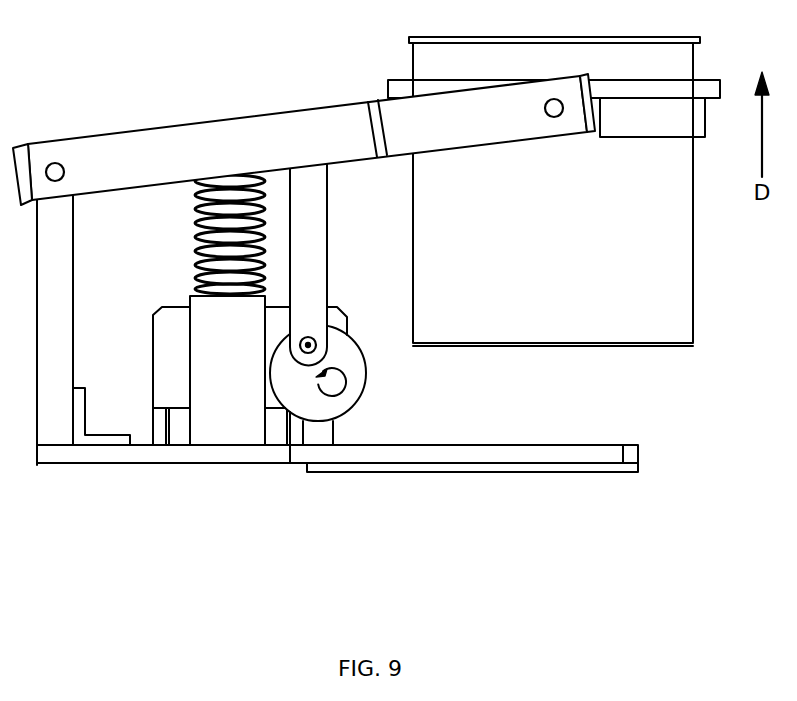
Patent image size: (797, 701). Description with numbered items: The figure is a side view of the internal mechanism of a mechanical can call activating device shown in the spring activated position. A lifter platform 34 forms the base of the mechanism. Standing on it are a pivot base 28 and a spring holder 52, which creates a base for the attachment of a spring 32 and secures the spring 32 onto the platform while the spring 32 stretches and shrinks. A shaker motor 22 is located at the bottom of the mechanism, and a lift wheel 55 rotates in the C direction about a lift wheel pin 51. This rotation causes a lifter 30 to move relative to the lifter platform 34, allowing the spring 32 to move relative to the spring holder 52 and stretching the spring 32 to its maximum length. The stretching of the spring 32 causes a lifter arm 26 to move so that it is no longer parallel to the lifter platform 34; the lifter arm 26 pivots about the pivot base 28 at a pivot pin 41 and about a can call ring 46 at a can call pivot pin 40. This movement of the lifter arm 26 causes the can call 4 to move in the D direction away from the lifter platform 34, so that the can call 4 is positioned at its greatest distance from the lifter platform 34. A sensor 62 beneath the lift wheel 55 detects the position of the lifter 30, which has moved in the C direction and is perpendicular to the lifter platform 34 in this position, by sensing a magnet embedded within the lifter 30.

The can call 4 is at (554, 191).
The shaker motor 22 is at (250, 376).
The lifter arm 26 is at (304, 139).
The pivot base 28 is at (83, 330).
The lifter 30 is at (308, 265).
The spring 32 is at (193, 290).
The lifter platform 34 is at (543, 455).
The can call pivot pin 40 is at (553, 85).
The pivot pin 41 is at (55, 150).
The can call ring 46 is at (652, 117).
The lift wheel pin 51 is at (322, 345).
The spring holder 52 is at (227, 370).
The lift wheel 55 is at (318, 373).
The sensor 62 is at (310, 441).